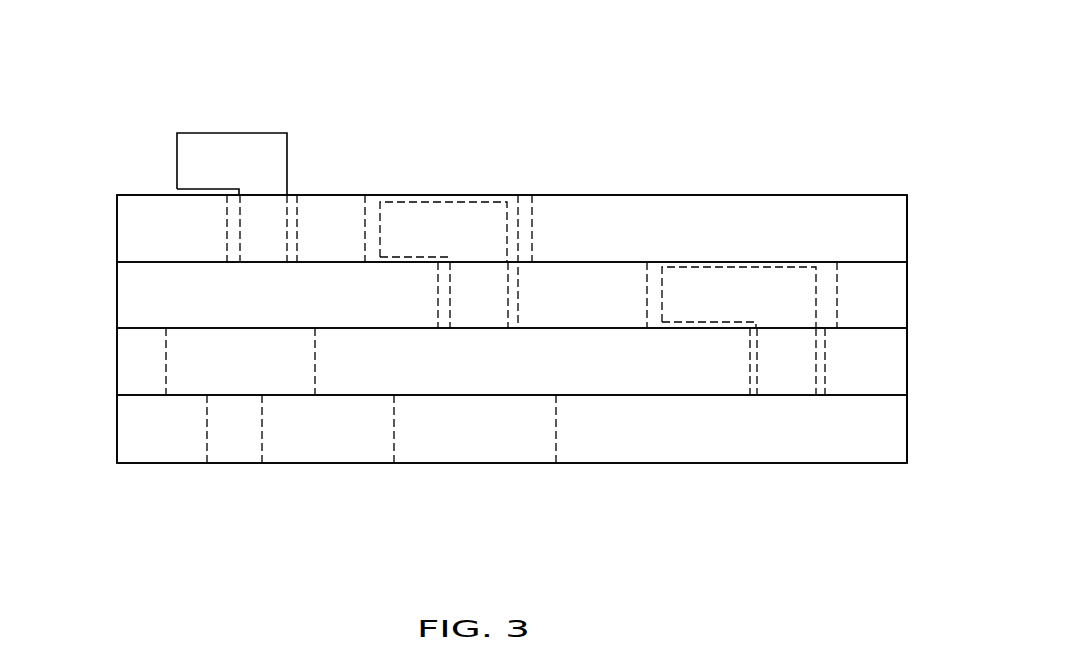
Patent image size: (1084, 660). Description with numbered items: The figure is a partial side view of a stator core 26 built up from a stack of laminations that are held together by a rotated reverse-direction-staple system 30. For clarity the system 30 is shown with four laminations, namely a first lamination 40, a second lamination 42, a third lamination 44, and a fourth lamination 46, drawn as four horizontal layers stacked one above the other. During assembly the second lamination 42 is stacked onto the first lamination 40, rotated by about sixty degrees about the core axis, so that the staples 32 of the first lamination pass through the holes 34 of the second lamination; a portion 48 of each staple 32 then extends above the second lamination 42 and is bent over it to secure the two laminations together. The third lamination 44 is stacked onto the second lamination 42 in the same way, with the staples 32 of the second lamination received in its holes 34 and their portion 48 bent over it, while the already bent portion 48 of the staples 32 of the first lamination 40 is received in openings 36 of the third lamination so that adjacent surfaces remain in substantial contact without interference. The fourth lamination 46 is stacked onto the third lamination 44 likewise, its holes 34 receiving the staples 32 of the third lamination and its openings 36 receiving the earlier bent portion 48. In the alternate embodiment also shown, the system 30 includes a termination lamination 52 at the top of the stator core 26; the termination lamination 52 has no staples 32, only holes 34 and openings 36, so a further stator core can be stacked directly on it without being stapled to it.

The stator core 26 is at (114, 185).
The rotated reverse-direction-staple system 30 is at (748, 123).
The staple 32 is at (277, 148).
The hole 34 is at (227, 235).
The opening 36 is at (532, 226).
The first lamination 40 is at (118, 435).
The second lamination 42 is at (118, 368).
The third lamination 44 is at (118, 302).
The fourth lamination 46 is at (118, 236).
The portion 48 is at (195, 163).
The termination lamination 52 is at (882, 240).